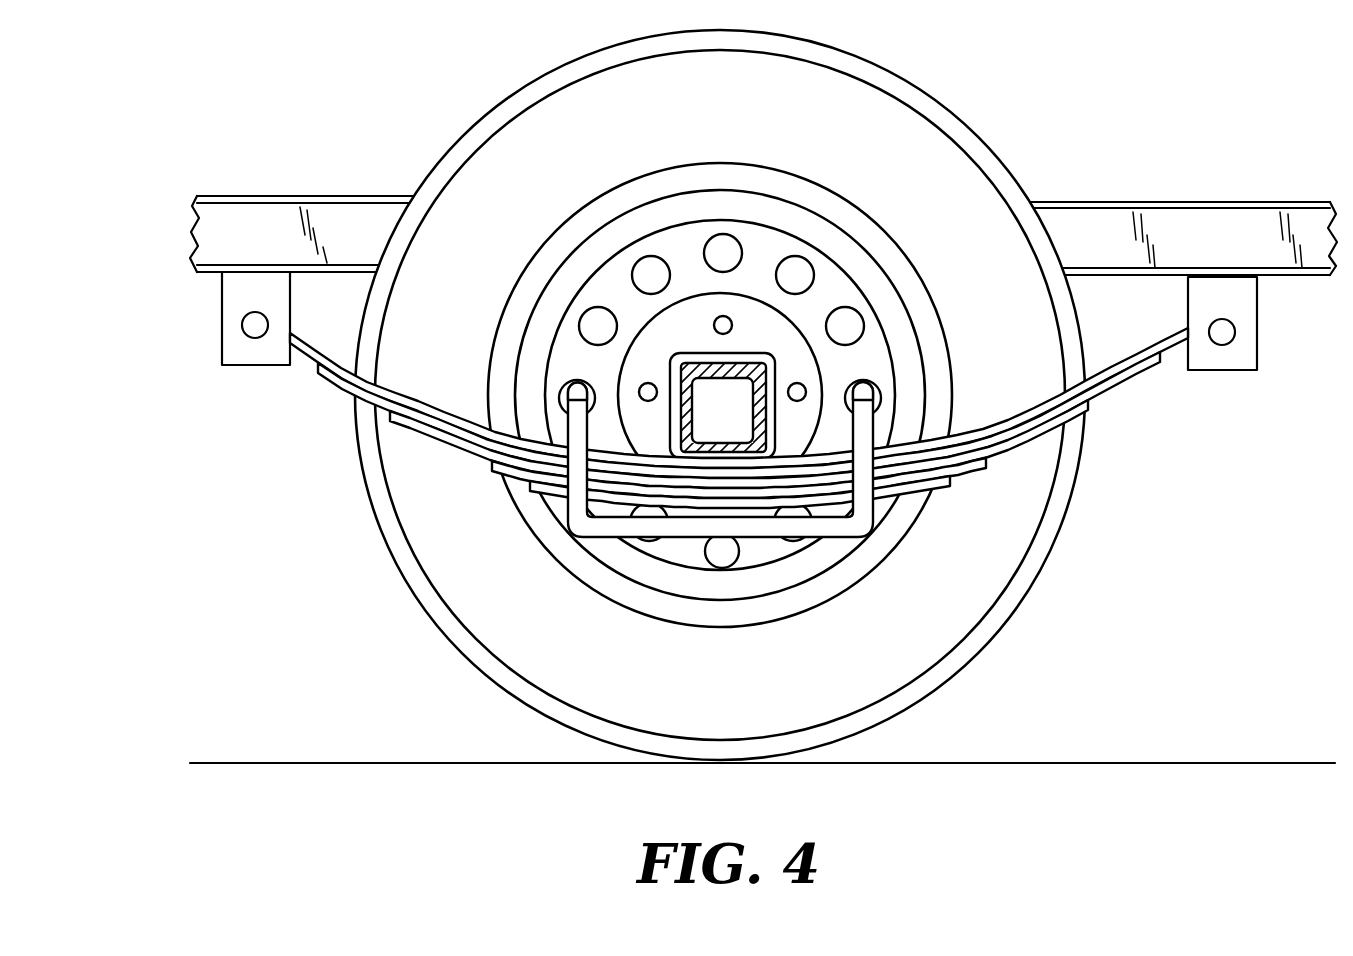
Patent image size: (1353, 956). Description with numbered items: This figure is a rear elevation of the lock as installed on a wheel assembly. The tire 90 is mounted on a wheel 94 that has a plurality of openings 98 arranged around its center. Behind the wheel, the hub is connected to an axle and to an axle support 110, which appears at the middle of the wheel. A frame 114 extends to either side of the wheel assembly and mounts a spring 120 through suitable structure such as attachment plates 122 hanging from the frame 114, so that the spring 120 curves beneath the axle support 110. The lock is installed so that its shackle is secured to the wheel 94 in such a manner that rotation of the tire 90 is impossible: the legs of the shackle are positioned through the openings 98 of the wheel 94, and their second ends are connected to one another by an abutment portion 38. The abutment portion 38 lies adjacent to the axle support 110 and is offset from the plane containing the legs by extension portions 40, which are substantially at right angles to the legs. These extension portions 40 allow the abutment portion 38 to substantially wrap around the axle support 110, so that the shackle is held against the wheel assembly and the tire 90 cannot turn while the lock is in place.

The abutment portion 38 is at (760, 530).
The extension portions 40 is at (513, 478).
The tire 90 is at (888, 93).
The wheel 94 is at (680, 552).
The openings 98 is at (570, 385).
The axle support 110 is at (703, 372).
The frame 114 is at (1222, 204).
The spring 120 is at (1128, 388).
The attachment plates 122 is at (235, 350).